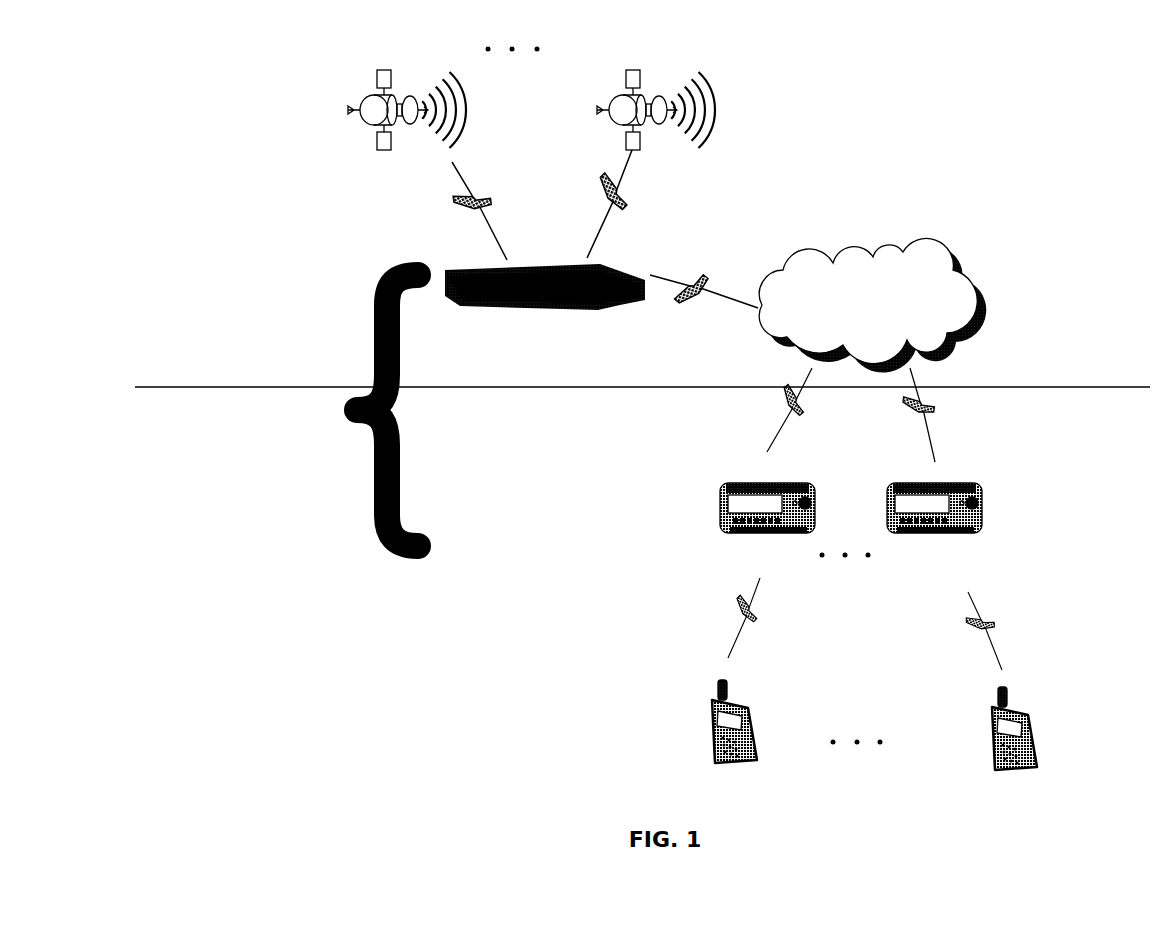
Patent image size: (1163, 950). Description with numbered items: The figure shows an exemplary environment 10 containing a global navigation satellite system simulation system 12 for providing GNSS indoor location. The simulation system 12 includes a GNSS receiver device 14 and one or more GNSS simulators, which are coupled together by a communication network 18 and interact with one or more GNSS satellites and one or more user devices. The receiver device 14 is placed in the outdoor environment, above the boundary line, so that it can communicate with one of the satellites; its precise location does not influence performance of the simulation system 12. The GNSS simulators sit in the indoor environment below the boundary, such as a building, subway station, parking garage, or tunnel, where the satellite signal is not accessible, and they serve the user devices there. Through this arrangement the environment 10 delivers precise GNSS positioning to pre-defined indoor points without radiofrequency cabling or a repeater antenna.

The environment 10 is at (1072, 81).
The GNSS simulation system 12 is at (642, 410).
The GNSS receiver device 14 is at (545, 301).
The communication network 18 is at (904, 329).